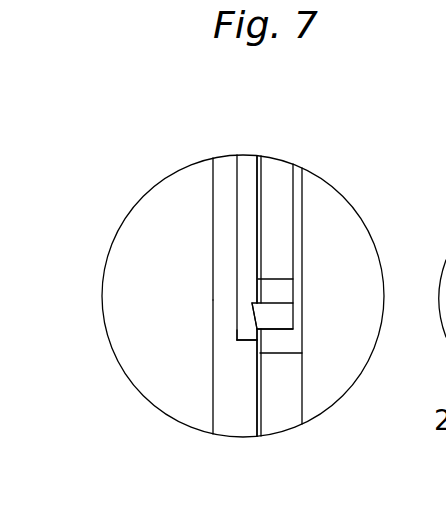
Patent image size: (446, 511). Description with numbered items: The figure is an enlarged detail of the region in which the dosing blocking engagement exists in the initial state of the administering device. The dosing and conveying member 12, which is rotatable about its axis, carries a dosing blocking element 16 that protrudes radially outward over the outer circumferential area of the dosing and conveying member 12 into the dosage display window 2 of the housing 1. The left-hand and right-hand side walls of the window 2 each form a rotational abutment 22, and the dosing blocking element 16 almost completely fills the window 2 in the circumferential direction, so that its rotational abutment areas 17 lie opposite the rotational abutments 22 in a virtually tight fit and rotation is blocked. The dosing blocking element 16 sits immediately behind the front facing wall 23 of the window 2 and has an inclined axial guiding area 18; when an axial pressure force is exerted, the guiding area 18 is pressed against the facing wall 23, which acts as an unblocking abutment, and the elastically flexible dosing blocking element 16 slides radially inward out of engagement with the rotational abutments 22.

The housing 1 is at (225, 393).
The dosage display window 2 is at (225, 231).
The dosing and conveying member 12 is at (283, 415).
The dosing blocking element 16 is at (280, 317).
The rotational abutment areas 17 is at (272, 318).
The axial guiding area 18 is at (255, 314).
The rotational abutment 22 is at (252, 282).
The facing wall 23 is at (246, 342).